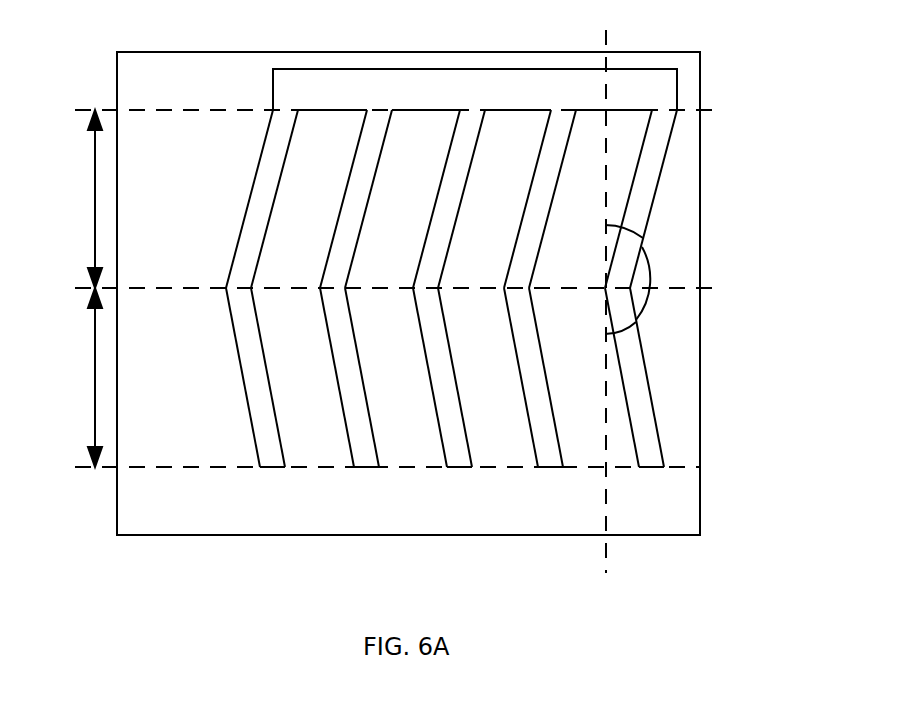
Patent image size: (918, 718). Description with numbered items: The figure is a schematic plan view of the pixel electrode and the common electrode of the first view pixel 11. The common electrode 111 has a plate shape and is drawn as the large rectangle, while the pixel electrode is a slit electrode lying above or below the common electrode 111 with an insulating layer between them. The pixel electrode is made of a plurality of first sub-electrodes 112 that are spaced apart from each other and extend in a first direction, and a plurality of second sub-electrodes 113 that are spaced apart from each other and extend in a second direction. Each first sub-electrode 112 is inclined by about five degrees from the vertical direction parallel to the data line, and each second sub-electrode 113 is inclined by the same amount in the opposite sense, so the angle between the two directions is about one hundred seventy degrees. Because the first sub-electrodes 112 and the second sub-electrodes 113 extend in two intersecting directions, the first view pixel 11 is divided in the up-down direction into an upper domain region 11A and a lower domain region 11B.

The first view pixel 11 is at (376, 20).
The upper domain region 11A is at (77, 199).
The lower domain region 11B is at (80, 377).
The common electrode 111 is at (677, 507).
The first sub-electrodes 112 is at (650, 157).
The second sub-electrodes 113 is at (635, 393).